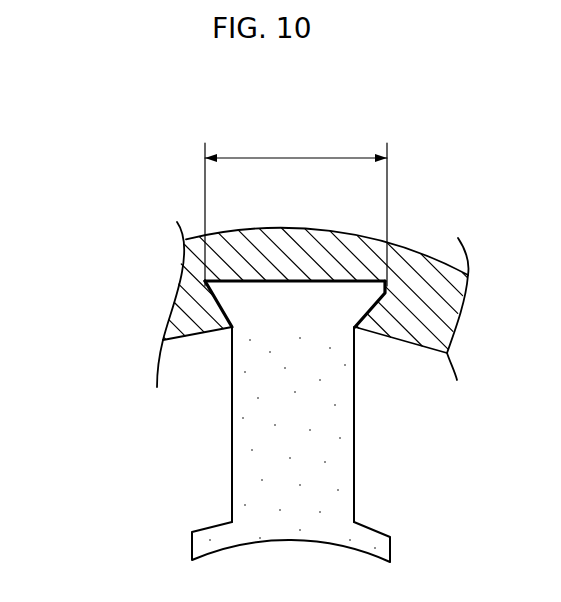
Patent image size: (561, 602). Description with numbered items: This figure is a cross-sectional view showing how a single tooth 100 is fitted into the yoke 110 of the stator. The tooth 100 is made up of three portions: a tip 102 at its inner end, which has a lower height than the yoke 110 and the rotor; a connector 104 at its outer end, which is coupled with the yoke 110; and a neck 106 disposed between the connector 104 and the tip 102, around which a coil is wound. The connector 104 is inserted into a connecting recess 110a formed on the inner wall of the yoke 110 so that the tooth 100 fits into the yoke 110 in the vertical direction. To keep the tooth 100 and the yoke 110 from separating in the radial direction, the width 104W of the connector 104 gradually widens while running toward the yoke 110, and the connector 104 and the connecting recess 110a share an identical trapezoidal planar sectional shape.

The tooth 100 is at (100, 422).
The tip 102 is at (203, 541).
The connector 104 is at (198, 331).
The neck 106 is at (248, 428).
The yoke 110 is at (183, 246).
The connecting recess 110a is at (292, 279).
The width of the connector 104W is at (296, 211).